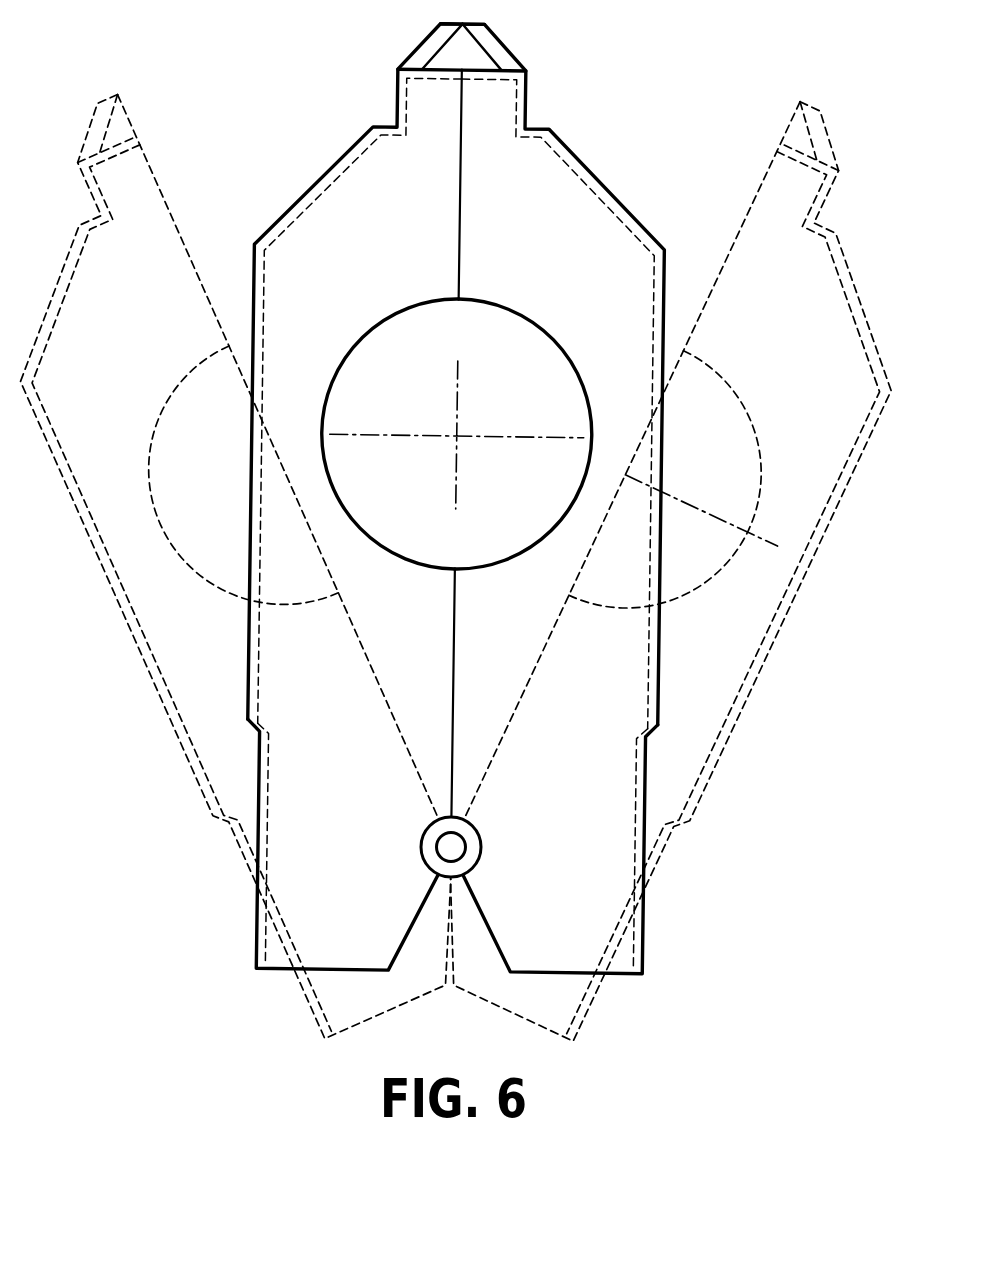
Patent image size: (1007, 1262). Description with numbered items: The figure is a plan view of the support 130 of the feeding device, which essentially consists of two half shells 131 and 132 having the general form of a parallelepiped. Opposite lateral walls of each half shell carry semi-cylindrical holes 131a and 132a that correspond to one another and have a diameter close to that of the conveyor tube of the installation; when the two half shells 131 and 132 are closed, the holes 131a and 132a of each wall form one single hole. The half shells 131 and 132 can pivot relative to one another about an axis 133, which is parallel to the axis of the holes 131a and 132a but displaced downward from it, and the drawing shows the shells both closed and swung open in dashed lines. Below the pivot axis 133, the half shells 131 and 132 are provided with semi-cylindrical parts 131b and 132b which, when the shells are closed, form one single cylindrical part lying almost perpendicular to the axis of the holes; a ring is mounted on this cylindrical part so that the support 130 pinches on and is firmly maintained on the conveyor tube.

The support 130 is at (493, 532).
The half shell 131 is at (250, 532).
The semi-cylindrical hole 131a is at (389, 433).
The semi-cylindrical part 131b is at (341, 845).
The half shell 132 is at (691, 535).
The semi-cylindrical hole 132a is at (524, 435).
The semi-cylindrical part 132b is at (559, 848).
The axis 133 is at (453, 847).